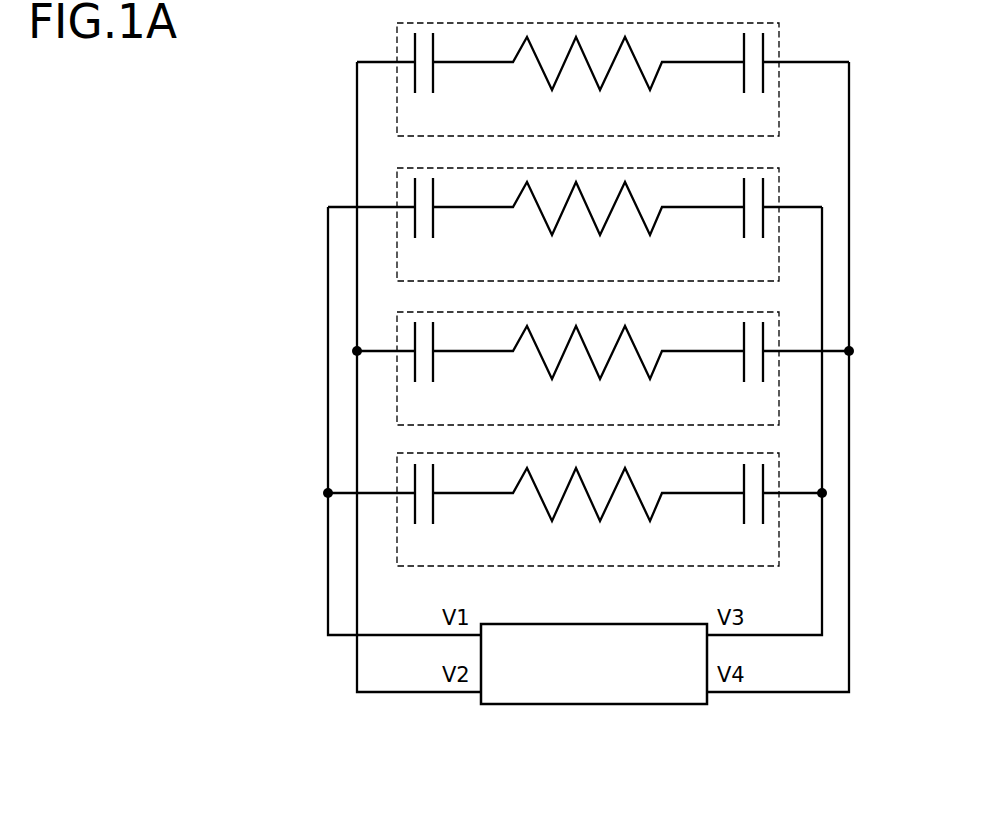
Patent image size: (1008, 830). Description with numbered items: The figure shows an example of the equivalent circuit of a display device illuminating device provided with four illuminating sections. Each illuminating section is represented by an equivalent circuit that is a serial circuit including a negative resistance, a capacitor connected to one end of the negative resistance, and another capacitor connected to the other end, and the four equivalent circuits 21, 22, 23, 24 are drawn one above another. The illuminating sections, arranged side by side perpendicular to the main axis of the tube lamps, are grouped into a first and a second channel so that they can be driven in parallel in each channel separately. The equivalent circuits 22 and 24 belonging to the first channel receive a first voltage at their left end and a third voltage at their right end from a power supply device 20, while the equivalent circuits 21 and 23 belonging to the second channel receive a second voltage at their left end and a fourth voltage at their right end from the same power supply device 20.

The power supply device 20 is at (583, 706).
The equivalent circuit 21 is at (780, 43).
The equivalent circuit 22 is at (782, 187).
The equivalent circuit 23 is at (782, 330).
The equivalent circuit 24 is at (781, 471).